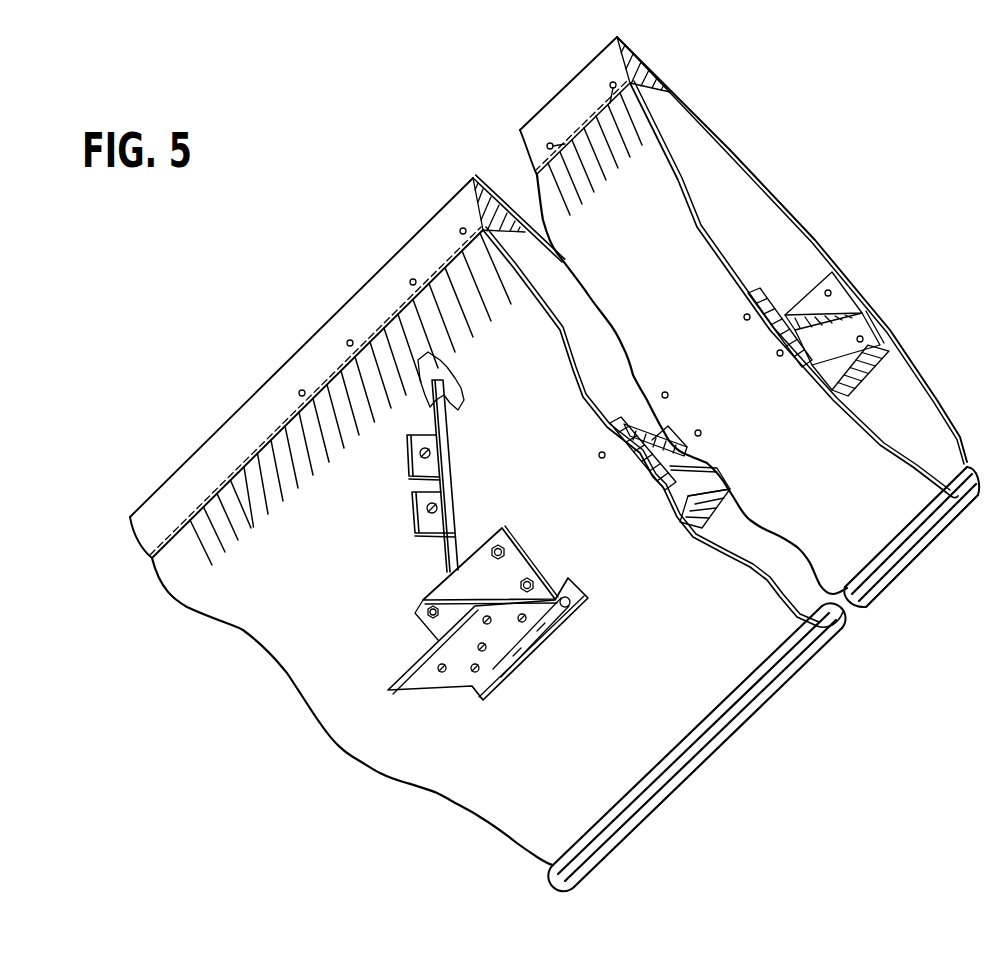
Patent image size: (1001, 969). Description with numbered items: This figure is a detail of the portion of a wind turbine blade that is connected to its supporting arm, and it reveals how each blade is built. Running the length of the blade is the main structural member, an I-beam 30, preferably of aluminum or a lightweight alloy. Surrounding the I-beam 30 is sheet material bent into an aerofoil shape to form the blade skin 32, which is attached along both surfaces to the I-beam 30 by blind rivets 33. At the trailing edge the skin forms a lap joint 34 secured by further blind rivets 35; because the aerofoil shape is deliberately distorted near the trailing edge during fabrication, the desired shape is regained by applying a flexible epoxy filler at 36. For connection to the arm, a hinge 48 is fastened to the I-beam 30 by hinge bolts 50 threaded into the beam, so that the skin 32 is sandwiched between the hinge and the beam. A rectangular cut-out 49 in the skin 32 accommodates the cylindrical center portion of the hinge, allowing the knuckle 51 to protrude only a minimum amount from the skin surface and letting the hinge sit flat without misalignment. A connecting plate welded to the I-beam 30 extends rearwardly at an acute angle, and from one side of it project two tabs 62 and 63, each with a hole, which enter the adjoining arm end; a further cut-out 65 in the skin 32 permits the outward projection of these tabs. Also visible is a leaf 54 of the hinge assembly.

The I-beam 30 is at (840, 267).
The blade skin 32 is at (778, 222).
The blind rivets 33 is at (777, 353).
The lap joint 34 is at (560, 113).
The blind rivets 35 is at (553, 146).
The flexible epoxy filler 36 is at (557, 180).
The hinge 48 is at (448, 675).
The cut-out 49 is at (585, 600).
The hinge bolts 50 is at (425, 609).
The knuckle 51 is at (537, 628).
The hinge leaf plate 54 is at (417, 682).
The tab 62 is at (405, 450).
The tab 63 is at (412, 525).
The cut-out 65 is at (456, 487).